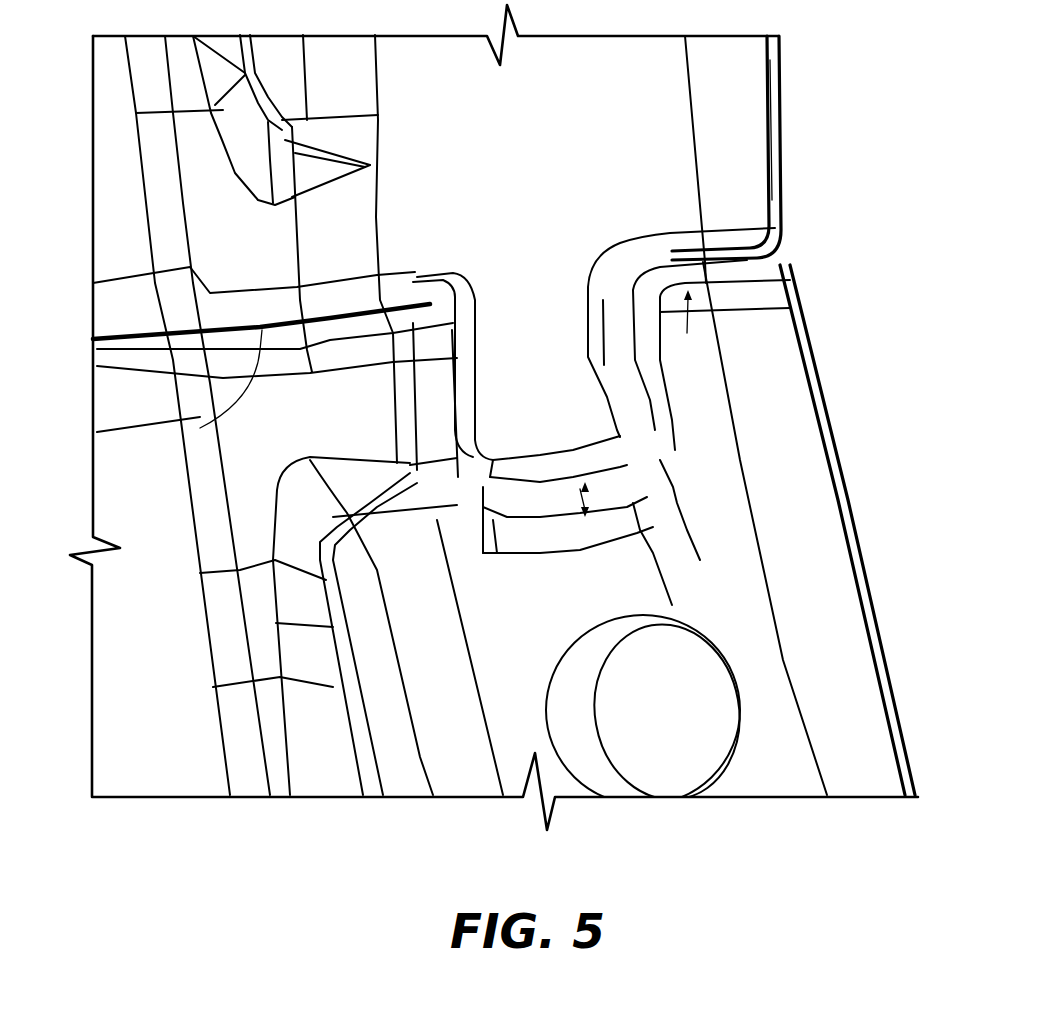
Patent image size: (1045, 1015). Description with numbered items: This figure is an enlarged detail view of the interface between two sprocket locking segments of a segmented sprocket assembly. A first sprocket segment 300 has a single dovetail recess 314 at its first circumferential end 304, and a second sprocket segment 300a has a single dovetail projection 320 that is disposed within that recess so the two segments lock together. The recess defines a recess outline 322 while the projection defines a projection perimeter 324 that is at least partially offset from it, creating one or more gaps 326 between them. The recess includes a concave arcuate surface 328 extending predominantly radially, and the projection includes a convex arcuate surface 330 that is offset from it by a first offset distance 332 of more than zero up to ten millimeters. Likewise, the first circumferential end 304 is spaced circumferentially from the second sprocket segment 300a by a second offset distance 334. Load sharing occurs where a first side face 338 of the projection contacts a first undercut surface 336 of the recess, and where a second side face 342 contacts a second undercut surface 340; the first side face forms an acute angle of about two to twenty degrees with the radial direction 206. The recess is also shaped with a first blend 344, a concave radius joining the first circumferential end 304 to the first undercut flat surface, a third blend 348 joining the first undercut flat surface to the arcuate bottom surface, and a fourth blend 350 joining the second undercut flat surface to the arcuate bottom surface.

The radial direction 206 is at (748, 281).
The first sprocket segment 300 is at (885, 588).
The second sprocket segment 300a is at (811, 135).
The first circumferential end 304 is at (200, 428).
The single dovetail recess 314 is at (636, 478).
The single dovetail projection 320 is at (575, 385).
The recess outline 322 is at (640, 510).
The projection perimeter 324 is at (654, 448).
The gaps 326 is at (750, 267).
The concave arcuate surface 328 is at (580, 520).
The convex arcuate surface 330 is at (517, 470).
The first offset distance 332 is at (580, 500).
The second offset distance 334 is at (130, 445).
The first undercut surface 336 is at (620, 400).
The first side face 338 is at (620, 400).
The second undercut surface 340 is at (450, 412).
The second side face 342 is at (453, 383).
The first blend 344 is at (660, 492).
The third blend 348 is at (641, 312).
The fourth blend 350 is at (432, 323).